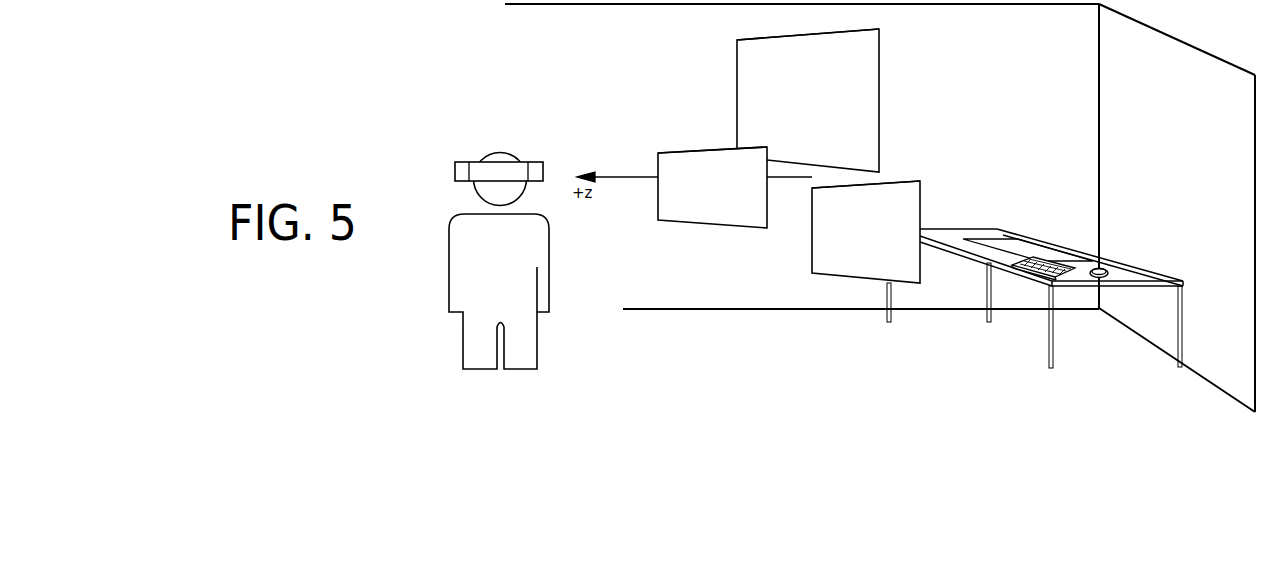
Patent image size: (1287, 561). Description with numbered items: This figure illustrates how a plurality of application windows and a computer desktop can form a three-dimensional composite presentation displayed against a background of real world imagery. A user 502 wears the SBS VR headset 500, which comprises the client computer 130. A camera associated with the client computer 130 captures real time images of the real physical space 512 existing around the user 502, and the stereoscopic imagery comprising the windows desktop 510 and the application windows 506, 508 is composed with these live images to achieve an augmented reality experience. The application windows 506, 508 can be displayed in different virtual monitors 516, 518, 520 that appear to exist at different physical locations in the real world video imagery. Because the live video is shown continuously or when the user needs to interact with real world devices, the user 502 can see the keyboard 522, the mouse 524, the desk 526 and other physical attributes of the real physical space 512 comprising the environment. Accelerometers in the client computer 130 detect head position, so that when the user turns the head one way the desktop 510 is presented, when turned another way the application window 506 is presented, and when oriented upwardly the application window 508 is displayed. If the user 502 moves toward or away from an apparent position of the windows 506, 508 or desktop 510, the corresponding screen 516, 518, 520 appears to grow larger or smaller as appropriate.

The SBS VR headset 500 is at (473, 245).
The client computer 130 is at (515, 180).
The user 502 is at (515, 273).
The application window 506 is at (707, 216).
The application window 508 is at (827, 138).
The windows desktop 510 is at (905, 236).
The real physical space 512 is at (1062, 175).
The virtual monitor 516 is at (677, 152).
The virtual monitor 518 is at (757, 38).
The virtual monitor 520 is at (906, 180).
The keyboard 522 is at (1058, 266).
The mouse 524 is at (1100, 267).
The desk 526 is at (1150, 278).